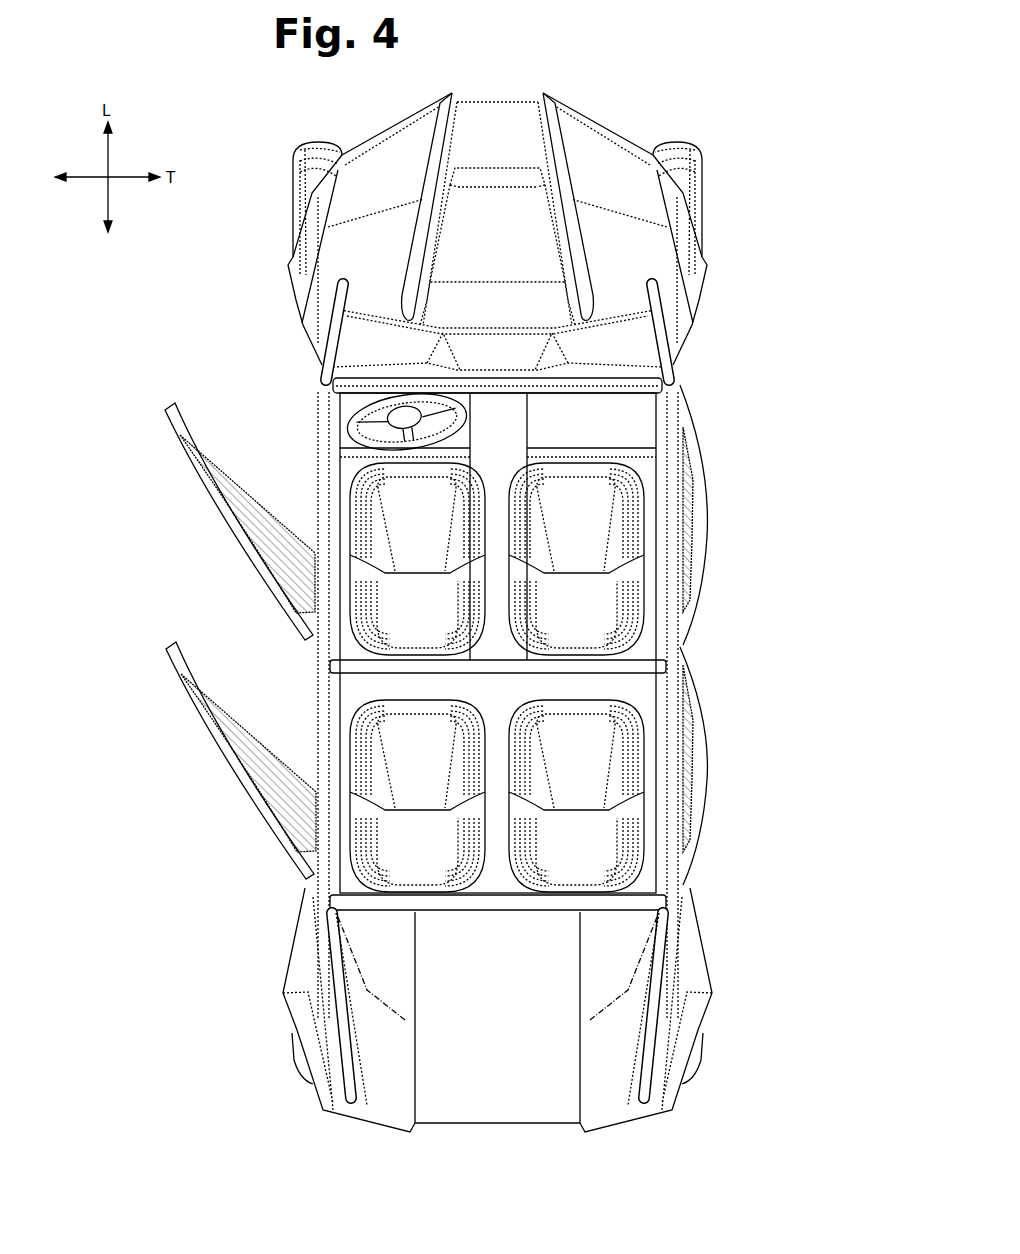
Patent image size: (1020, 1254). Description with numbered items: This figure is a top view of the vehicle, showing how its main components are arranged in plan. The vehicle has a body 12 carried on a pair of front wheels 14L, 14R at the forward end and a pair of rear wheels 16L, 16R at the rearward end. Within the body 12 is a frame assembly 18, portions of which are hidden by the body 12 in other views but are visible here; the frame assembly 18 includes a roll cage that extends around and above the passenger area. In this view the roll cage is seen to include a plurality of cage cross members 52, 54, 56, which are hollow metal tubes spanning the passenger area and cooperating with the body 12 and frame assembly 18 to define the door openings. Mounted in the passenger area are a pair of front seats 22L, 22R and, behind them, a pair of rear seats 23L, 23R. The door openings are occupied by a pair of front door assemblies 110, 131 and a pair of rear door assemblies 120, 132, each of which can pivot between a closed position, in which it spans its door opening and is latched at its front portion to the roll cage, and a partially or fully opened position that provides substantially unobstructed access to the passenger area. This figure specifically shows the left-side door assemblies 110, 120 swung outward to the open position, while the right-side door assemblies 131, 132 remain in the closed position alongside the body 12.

The body 12 is at (595, 126).
The front wheel 14L is at (293, 193).
The front wheel 14R is at (705, 190).
The rear wheel 16L is at (297, 1072).
The rear wheel 16R is at (697, 1072).
The frame assembly 18 is at (317, 400).
The front seat 22L is at (352, 498).
The front seat 22R is at (612, 497).
The rear seat 23L is at (392, 732).
The rear seat 23R is at (602, 740).
The cage cross member 52 is at (362, 380).
The cage cross member 54 is at (640, 668).
The cage cross member 56 is at (640, 903).
The front door assembly 110 is at (233, 553).
The rear door assembly 120 is at (253, 815).
The front door assembly 131 is at (697, 592).
The rear door assembly 132 is at (699, 813).